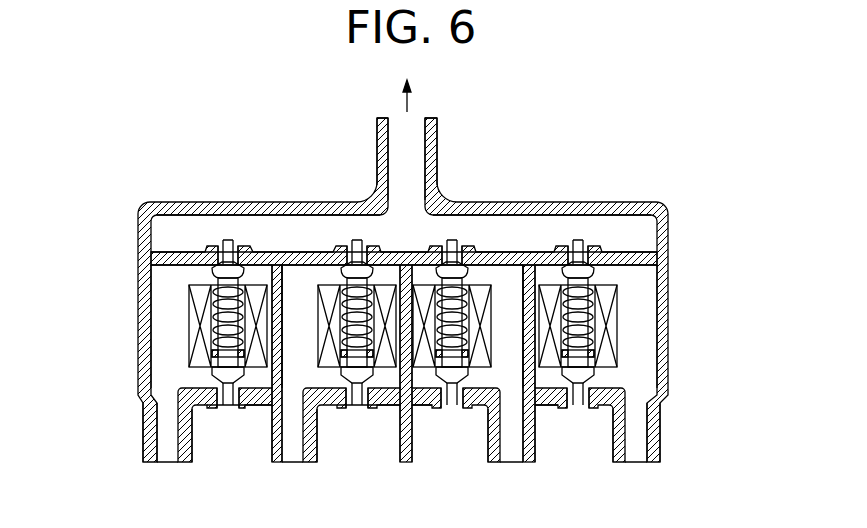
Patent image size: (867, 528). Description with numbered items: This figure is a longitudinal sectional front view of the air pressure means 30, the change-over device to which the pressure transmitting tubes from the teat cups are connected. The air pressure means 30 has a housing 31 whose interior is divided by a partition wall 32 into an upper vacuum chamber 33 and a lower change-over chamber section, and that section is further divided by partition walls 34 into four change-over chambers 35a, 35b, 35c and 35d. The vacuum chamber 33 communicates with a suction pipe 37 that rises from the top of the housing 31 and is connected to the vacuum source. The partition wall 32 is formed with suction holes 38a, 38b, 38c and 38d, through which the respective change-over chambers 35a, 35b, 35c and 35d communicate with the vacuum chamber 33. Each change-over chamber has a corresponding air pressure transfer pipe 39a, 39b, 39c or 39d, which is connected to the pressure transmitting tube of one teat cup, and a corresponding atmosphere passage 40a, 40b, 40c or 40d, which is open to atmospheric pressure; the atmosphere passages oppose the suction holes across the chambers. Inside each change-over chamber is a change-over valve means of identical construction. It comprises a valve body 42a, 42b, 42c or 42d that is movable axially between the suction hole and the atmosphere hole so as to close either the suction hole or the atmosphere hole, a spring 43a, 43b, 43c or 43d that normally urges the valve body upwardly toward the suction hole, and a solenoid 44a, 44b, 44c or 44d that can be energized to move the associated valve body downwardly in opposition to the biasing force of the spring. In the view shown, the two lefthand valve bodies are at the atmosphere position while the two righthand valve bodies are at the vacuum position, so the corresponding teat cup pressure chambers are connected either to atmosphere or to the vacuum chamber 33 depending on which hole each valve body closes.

The air pressure means 30 is at (135, 196).
The housing 31 is at (643, 204).
The partition wall 32 is at (180, 250).
The vacuum chamber 33 is at (543, 222).
The partition walls 34 is at (273, 332).
The change-over chamber 35a is at (172, 287).
The change-over chamber 35b is at (331, 287).
The change-over chamber 35c is at (476, 286).
The change-over chamber 35d is at (642, 289).
The suction pipe 37 is at (438, 130).
The suction hole 38a is at (233, 246).
The suction hole 38b is at (330, 254).
The suction hole 38c is at (466, 248).
The suction hole 38d is at (590, 230).
The air pressure transfer pipe 39a is at (163, 450).
The air pressure transfer pipe 39b is at (293, 448).
The air pressure transfer pipe 39c is at (515, 447).
The air pressure transfer pipe 39d is at (638, 452).
The atmosphere passage 40a is at (230, 409).
The atmosphere passage 40b is at (348, 409).
The atmosphere passage 40c is at (420, 410).
The atmosphere passage 40d is at (548, 408).
The valve body 42a is at (230, 262).
The valve body 42b is at (362, 245).
The valve body 42c is at (447, 262).
The valve body 42d is at (573, 265).
The spring 43a is at (190, 303).
The spring 43b is at (327, 285).
The spring 43c is at (477, 285).
The spring 43d is at (600, 328).
The solenoid 44a is at (214, 406).
The solenoid 44b is at (385, 398).
The solenoid 44c is at (453, 403).
The solenoid 44d is at (580, 404).